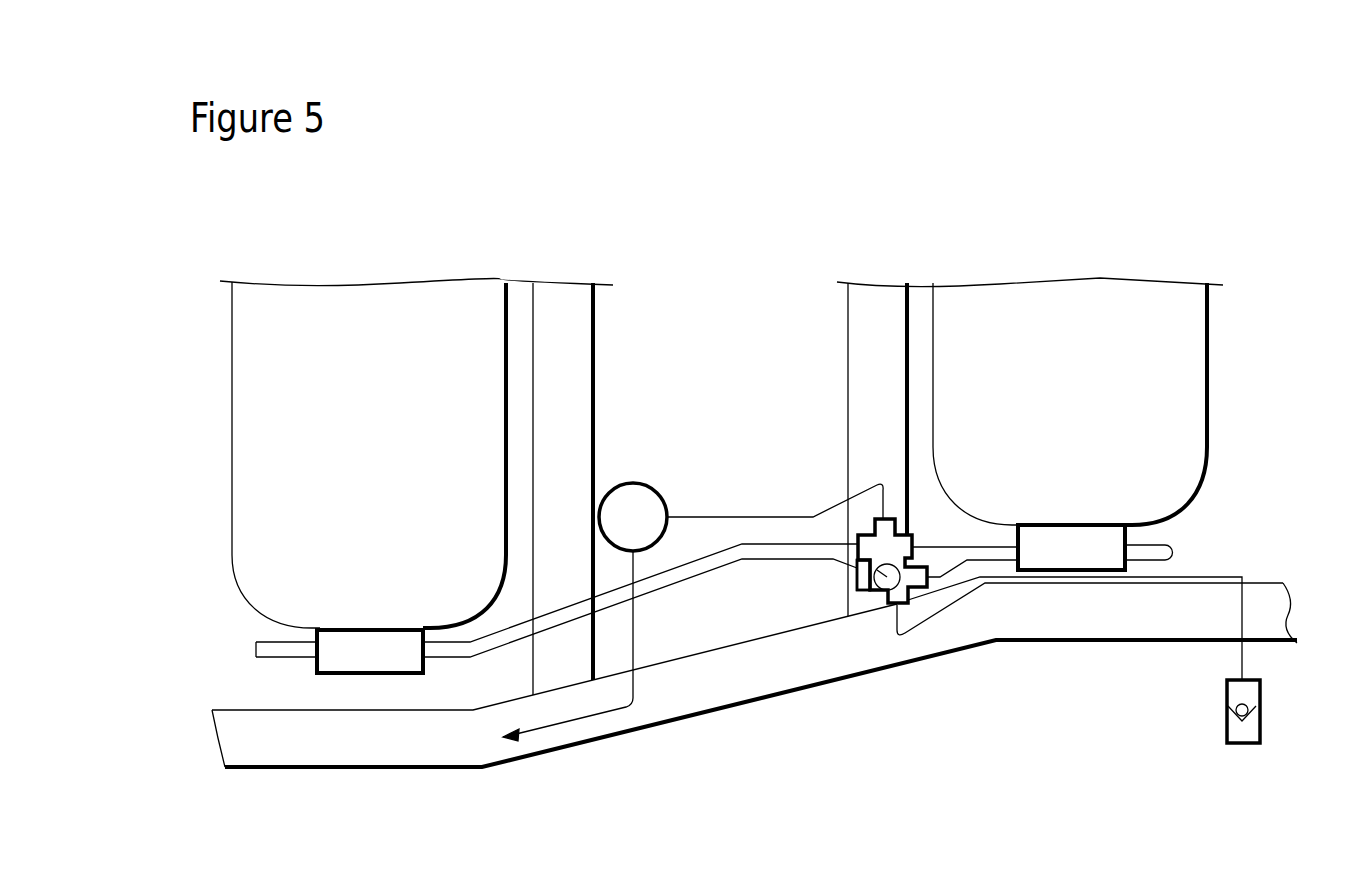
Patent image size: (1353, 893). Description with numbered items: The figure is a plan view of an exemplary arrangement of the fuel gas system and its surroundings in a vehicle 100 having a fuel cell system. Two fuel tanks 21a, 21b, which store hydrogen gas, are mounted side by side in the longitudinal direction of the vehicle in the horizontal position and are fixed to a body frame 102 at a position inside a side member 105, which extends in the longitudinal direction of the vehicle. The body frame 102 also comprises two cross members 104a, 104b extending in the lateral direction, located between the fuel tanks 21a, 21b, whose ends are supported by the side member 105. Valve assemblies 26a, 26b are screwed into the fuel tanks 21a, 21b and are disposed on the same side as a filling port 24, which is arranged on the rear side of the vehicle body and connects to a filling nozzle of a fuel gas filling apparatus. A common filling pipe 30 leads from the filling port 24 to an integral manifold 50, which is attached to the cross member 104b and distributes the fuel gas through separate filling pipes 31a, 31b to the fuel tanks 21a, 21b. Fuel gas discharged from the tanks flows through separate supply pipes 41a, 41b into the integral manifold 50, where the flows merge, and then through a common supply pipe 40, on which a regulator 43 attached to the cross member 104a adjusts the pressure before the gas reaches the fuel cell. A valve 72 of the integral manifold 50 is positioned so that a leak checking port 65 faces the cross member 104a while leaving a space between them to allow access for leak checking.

The vehicle 100 is at (740, 206).
The fuel tank 21a is at (377, 312).
The fuel tank 21b is at (1090, 308).
The body frame 102 is at (605, 334).
The cross member 104a is at (572, 405).
The cross member 104b is at (878, 305).
The regulator 43 is at (640, 482).
The common supply pipe 40 is at (744, 516).
The integral manifold 50 is at (890, 523).
The leak checking port 65 is at (865, 592).
The valve 72 is at (863, 575).
The valve assembly 26a is at (355, 634).
The valve assembly 26b is at (1080, 533).
The separate supply pipe 41a is at (254, 648).
The separate supply pipe 41b is at (967, 546).
The separate filling pipe 31a is at (677, 583).
The separate filling pipe 31b is at (1162, 543).
The common filling pipe 30 is at (1223, 577).
The filling port 24 is at (1242, 745).
The side member 105 is at (710, 682).